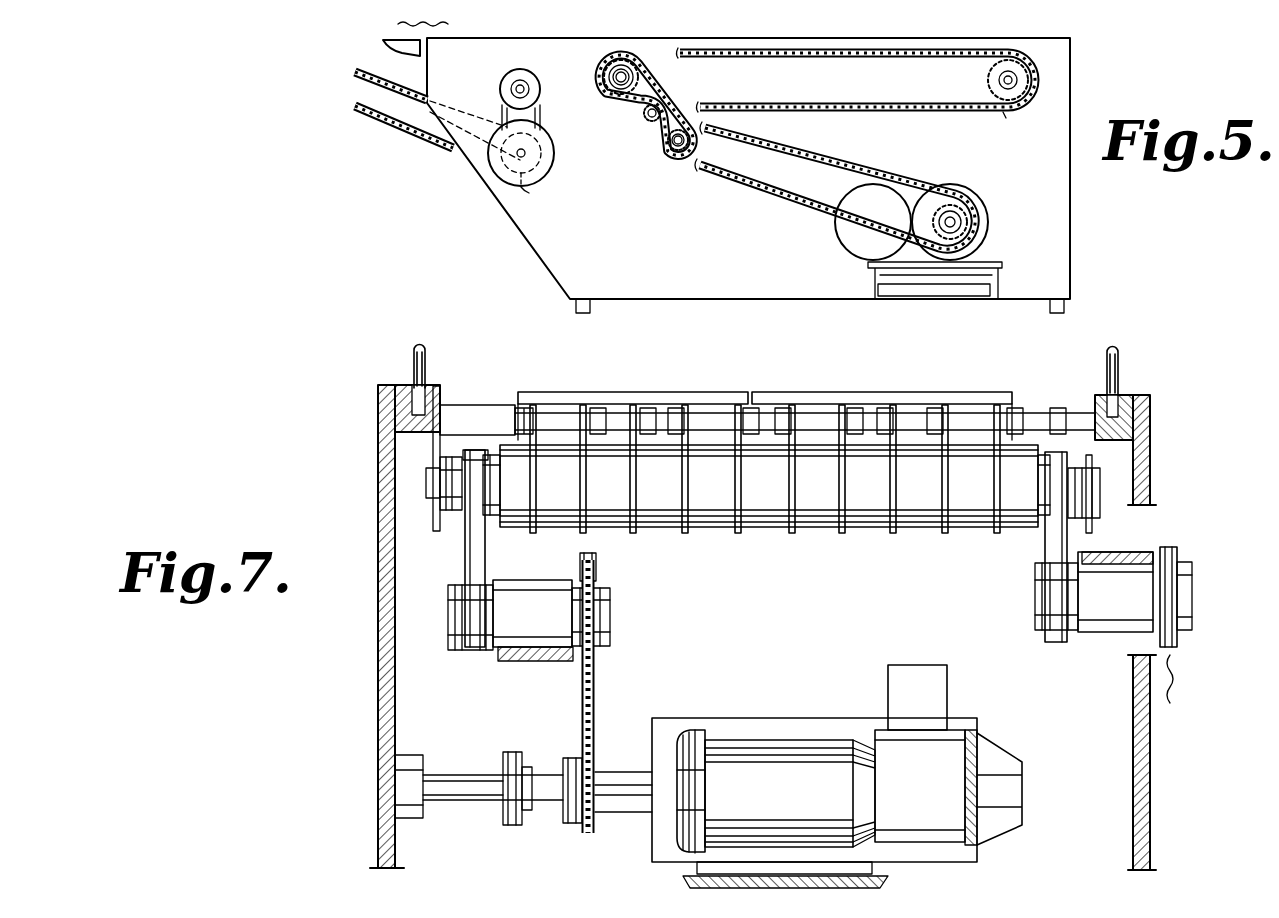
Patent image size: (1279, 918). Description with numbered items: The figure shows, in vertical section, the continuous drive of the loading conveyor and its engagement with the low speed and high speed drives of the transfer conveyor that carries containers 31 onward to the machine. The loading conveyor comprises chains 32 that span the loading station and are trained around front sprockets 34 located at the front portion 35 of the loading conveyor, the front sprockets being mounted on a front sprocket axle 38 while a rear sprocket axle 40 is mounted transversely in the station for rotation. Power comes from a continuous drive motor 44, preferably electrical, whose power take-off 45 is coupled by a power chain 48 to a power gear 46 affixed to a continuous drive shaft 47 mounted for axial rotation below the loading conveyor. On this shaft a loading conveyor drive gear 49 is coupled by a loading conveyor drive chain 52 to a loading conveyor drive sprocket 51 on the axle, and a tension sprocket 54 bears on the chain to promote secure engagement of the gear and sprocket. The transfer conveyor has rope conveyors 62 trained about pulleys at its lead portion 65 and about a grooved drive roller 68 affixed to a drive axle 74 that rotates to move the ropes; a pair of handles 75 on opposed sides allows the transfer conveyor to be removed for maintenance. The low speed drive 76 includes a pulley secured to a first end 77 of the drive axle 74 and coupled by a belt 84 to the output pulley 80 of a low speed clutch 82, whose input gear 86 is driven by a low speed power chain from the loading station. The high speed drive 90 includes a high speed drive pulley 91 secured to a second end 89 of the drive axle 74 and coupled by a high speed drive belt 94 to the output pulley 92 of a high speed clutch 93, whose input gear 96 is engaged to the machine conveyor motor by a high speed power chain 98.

In FIG. 7, the containers 31 is at (878, 404).
In FIG. 5, the chains 32 is at (834, 50).
In FIG. 5, the front sprockets 34 is at (1003, 58).
In FIG. 5, the front portion 35 is at (1004, 116).
In FIG. 5, the front sprocket axle 38 is at (1016, 86).
In FIG. 5, the rear sprocket axle 40 is at (603, 77).
In FIG. 5, the continuous drive motor 44 is at (980, 202).
In FIG. 7, the continuous drive motor 44 is at (822, 752).
In FIG. 5, the power take-off 45 is at (970, 231).
In FIG. 7, the power take-off 45 is at (612, 775).
In FIG. 7, the power gear 46 is at (596, 557).
In FIG. 5, the continuous drive shaft 47 is at (668, 144).
In FIG. 5, the power chain 48 is at (830, 166).
In FIG. 7, the power chain 48 is at (580, 691).
In FIG. 5, the loading conveyor drive gear 49 is at (676, 159).
In FIG. 5, the loading conveyor drive sprocket 51 is at (623, 62).
In FIG. 5, the loading conveyor drive chain 52 is at (676, 91).
In FIG. 5, the tension sprocket 54 is at (640, 121).
In FIG. 7, the rope conveyors 62 is at (833, 518).
In FIG. 7, the lead portion 65 is at (762, 395).
In FIG. 7, the drive roller 68 is at (965, 527).
In FIG. 5, the drive axle 74 is at (523, 86).
In FIG. 7, the drive axle 74 is at (432, 487).
In FIG. 7, the handles 75 is at (421, 342).
In FIG. 7, the low speed drive 76 is at (432, 613).
In FIG. 7, the first end 77 is at (462, 432).
In FIG. 7, the output pulley 80 is at (458, 650).
In FIG. 7, the low speed clutch 82 is at (545, 627).
In FIG. 7, the belt 84 is at (477, 563).
In FIG. 7, the input gear 86 is at (580, 577).
In FIG. 7, the second end 89 is at (1070, 452).
In FIG. 5, the high speed drive 90 is at (470, 79).
In FIG. 7, the high speed drive 90 is at (1172, 532).
In FIG. 5, the high speed drive pulley 91 is at (513, 66).
In FIG. 7, the output pulley 92 is at (1046, 623).
In FIG. 5, the high speed clutch 93 is at (552, 160).
In FIG. 7, the high speed clutch 93 is at (1134, 613).
In FIG. 5, the high speed drive belt 94 is at (541, 115).
In FIG. 7, the high speed drive belt 94 is at (1044, 547).
In FIG. 5, the input gear 96 is at (528, 192).
In FIG. 7, the input gear 96 is at (1184, 593).
In FIG. 5, the high speed power chain 98 is at (380, 128).
In FIG. 7, the high speed power chain 98 is at (1192, 624).